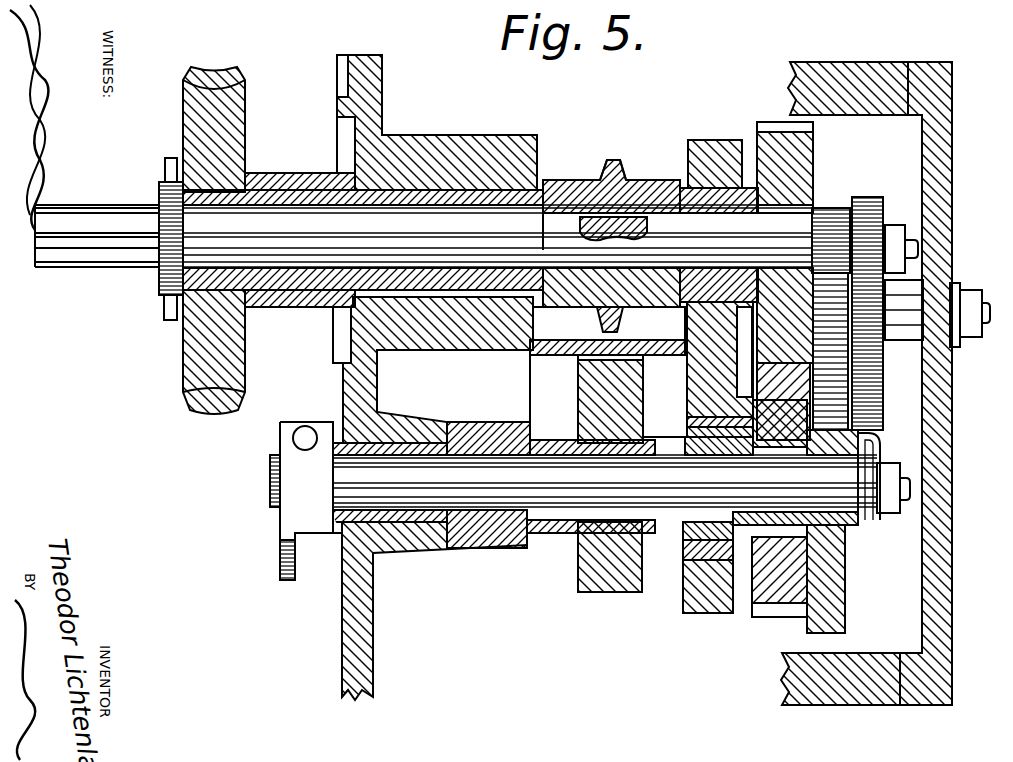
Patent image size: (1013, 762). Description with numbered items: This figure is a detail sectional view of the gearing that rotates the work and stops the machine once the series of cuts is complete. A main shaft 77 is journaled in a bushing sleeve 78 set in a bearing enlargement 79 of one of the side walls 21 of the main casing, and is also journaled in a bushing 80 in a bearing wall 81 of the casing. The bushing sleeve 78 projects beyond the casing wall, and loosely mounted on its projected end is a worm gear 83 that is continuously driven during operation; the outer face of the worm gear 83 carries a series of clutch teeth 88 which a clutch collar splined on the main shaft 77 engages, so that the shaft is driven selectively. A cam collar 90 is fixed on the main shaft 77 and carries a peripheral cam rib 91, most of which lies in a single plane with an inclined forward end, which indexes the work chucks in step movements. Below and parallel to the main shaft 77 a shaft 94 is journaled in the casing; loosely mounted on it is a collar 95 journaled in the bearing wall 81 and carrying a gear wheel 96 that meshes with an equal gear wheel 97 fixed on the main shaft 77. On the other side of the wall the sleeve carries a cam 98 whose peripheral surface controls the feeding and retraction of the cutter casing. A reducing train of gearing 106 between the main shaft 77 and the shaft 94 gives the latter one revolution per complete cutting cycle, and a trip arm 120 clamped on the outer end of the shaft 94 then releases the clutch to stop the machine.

The side wall 21 is at (383, 78).
The main shaft 77 is at (98, 225).
The bushing sleeve 78 is at (283, 197).
The bearing enlargement 79 is at (482, 160).
The bushing 80 is at (710, 203).
The bearing wall 81 is at (707, 160).
The worm gear 83 is at (230, 113).
The clutch teeth 88 is at (165, 160).
The cam collar 90 is at (563, 187).
The cam rib 91 is at (615, 157).
The shaft 94 is at (522, 487).
The collar 95 is at (673, 533).
The gear wheel 96 is at (770, 620).
The gear wheel 97 is at (792, 168).
The cam 98 is at (590, 590).
The reducing train of gearing 106 is at (883, 417).
The trip arm 120 is at (280, 558).